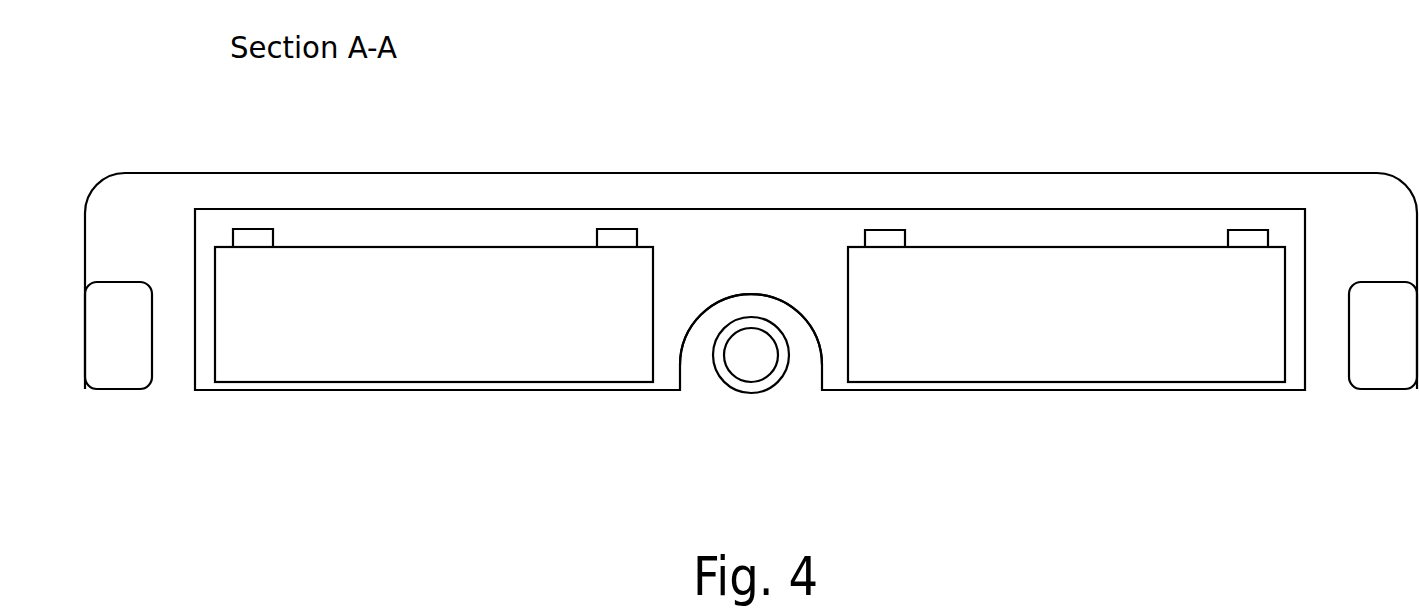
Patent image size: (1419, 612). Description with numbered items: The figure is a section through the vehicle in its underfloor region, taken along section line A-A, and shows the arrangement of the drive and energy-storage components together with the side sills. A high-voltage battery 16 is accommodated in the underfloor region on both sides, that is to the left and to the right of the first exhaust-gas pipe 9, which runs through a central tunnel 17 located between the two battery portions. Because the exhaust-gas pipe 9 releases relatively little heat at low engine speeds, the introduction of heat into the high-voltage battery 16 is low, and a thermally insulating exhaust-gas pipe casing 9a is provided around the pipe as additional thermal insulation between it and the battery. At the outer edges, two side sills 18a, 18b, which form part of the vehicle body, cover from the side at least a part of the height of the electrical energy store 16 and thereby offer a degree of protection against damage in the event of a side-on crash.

The first exhaust-gas pipe 9 is at (752, 380).
The thermally insulating exhaust-gas pipe casing 9a is at (745, 392).
The high-voltage battery 16 is at (462, 278).
The central tunnel 17 is at (752, 298).
The side sill 18a is at (115, 365).
The side sill 18b is at (1382, 365).